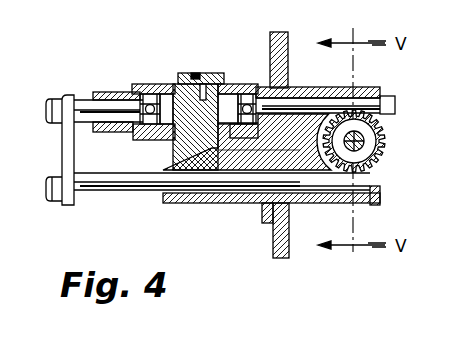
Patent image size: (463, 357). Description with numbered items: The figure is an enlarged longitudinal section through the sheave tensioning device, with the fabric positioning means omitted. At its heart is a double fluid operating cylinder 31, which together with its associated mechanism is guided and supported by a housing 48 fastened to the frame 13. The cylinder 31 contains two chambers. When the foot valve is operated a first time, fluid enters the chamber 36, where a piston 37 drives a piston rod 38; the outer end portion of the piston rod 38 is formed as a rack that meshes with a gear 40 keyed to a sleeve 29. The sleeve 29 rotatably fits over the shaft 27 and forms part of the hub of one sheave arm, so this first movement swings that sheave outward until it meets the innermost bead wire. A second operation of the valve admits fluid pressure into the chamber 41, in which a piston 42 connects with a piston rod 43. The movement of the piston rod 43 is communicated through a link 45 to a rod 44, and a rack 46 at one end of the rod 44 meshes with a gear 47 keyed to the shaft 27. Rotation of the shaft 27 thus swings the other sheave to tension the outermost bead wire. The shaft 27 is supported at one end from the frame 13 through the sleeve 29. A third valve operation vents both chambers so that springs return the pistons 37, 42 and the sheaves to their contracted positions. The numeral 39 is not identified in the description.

The frame 13 is at (272, 248).
The shaft 27 is at (316, 205).
The sleeve 29 is at (366, 150).
The double fluid operating cylinder 31 is at (196, 74).
The chamber 36 is at (229, 92).
The piston 37 is at (252, 86).
The piston rod 38 is at (297, 100).
The shaft 39 is at (397, 103).
The gear 40 is at (382, 137).
The chamber 41 is at (173, 86).
The piston 42 is at (148, 92).
The piston rod 43 is at (82, 102).
The rod 44 is at (90, 198).
The link 45 is at (62, 148).
The rack 46 is at (380, 196).
The gear 47 is at (387, 172).
The housing 48 is at (237, 152).